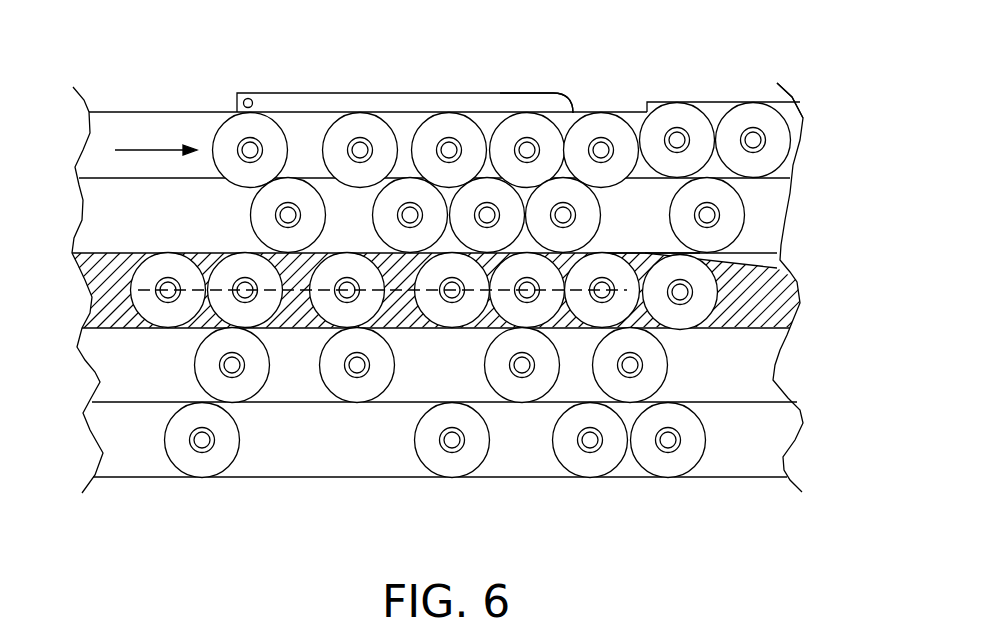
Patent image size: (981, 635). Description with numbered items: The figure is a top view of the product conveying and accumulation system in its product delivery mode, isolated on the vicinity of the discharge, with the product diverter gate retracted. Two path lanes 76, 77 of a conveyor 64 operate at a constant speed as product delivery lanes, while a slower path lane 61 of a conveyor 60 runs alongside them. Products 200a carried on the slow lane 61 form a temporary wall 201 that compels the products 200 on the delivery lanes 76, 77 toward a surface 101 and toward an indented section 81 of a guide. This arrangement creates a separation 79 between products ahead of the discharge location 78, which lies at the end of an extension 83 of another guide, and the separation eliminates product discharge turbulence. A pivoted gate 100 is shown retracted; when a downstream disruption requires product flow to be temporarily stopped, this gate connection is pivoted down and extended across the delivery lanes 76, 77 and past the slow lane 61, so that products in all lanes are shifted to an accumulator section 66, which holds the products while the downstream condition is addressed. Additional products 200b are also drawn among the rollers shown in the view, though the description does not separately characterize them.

The conveyor 60 is at (143, 403).
The path lane 61 is at (110, 312).
The conveyor 64 is at (118, 215).
The accumulator section 66 is at (733, 465).
The path lane 76 is at (575, 113).
The path lane 77 is at (637, 203).
The discharge location 78 is at (640, 253).
The separation 79 is at (771, 88).
The indented section 81 is at (638, 223).
The extension 83 is at (775, 265).
The pivoted gate 100 is at (406, 100).
The surface 101 is at (568, 110).
The products 200 is at (513, 127).
The products 200a is at (437, 308).
The roller in lower layer 200b is at (357, 380).
The temporary wall 201 is at (575, 290).